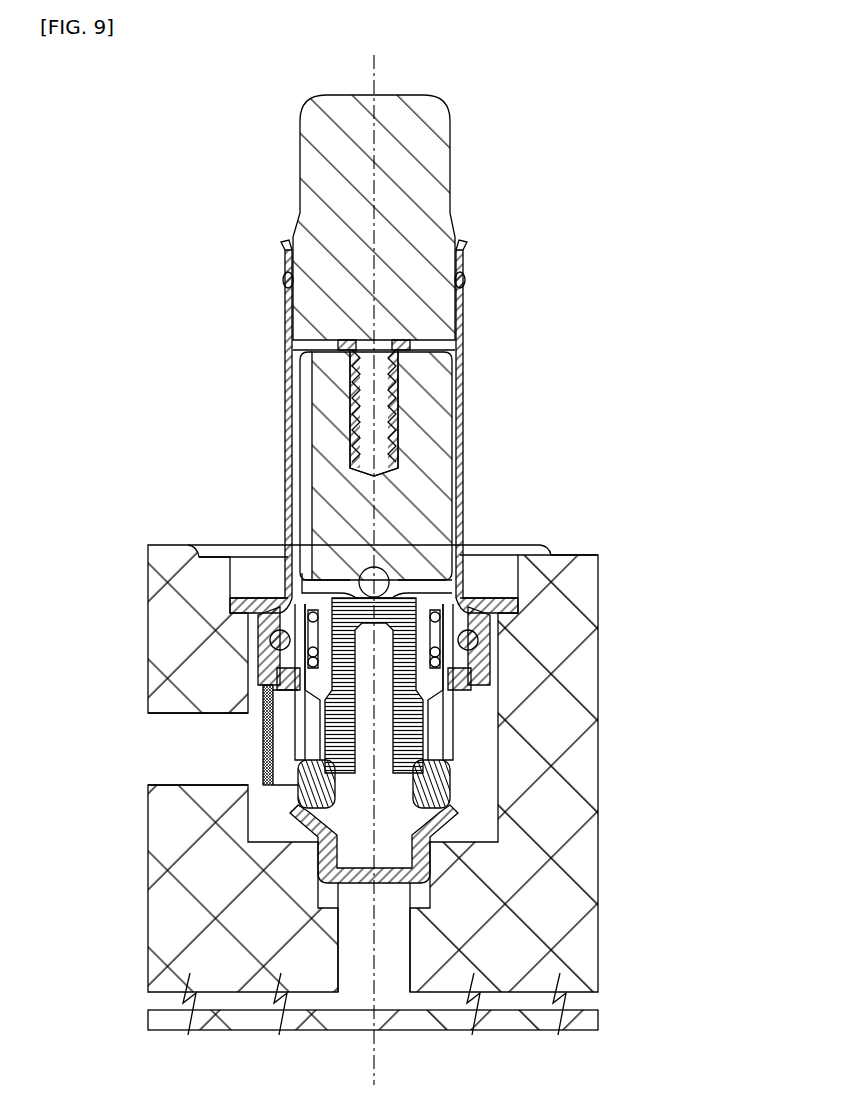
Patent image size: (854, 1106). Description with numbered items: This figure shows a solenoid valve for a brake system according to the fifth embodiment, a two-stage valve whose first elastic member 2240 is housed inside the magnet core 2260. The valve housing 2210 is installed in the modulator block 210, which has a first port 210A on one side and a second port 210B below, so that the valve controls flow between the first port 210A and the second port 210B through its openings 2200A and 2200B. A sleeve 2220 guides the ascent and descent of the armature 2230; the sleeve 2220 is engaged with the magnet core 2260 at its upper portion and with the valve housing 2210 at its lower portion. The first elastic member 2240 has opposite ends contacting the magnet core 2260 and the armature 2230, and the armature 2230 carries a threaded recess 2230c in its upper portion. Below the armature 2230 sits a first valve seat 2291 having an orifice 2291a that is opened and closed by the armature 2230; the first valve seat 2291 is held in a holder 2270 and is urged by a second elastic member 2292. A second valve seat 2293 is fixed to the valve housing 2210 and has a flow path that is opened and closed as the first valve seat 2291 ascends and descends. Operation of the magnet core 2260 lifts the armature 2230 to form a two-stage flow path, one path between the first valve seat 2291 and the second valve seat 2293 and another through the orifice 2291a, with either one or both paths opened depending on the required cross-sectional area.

The modulator block 210 is at (584, 575).
The first port 210A is at (186, 752).
The second port 210B is at (395, 953).
The magnet core 2260 is at (440, 171).
The sleeve 2220 is at (464, 385).
The first elastic member 2240 is at (345, 342).
The armature 2230 is at (445, 457).
The threaded hole 2230c is at (358, 410).
The first valve seat 2291 is at (348, 596).
The orifice 2291a is at (395, 603).
The holder 2270 is at (265, 650).
The second elastic member 2292 is at (312, 660).
The first flow path 2200A is at (290, 740).
The second valve seat 2293 is at (318, 792).
The valve housing 2210 is at (445, 815).
The second flow path 2200B is at (362, 876).